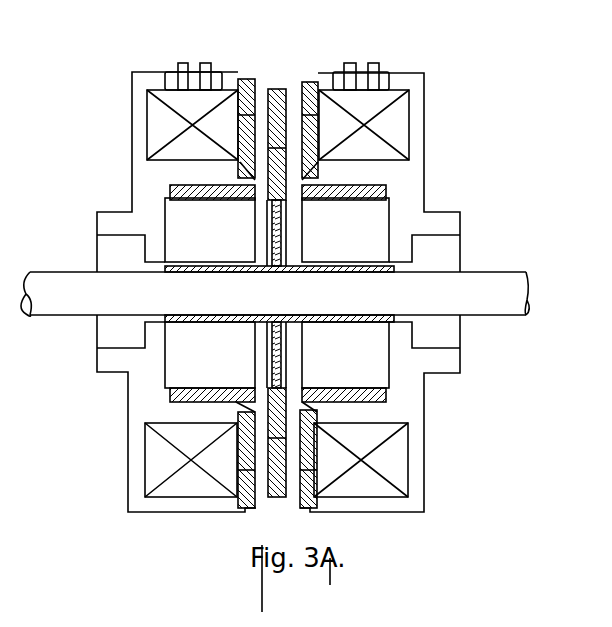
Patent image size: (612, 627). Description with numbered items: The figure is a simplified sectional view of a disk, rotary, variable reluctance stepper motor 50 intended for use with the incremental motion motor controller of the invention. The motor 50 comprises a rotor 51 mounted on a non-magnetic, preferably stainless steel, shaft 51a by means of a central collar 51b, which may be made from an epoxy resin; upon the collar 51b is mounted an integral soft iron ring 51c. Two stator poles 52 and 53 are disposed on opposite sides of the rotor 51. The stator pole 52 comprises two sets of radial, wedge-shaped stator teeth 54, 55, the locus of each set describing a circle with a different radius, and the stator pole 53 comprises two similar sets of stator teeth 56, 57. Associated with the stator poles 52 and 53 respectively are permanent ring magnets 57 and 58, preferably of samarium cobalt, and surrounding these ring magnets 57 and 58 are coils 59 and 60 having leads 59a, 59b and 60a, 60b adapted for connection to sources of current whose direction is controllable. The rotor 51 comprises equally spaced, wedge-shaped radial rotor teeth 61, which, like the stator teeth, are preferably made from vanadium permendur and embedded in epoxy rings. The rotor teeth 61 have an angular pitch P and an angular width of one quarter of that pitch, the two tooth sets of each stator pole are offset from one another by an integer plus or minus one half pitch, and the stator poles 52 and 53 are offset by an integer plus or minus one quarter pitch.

The motor 50 is at (308, 50).
The rotor 51 is at (270, 498).
The shaft 51a is at (514, 277).
The central collar 51b is at (165, 268).
The soft iron ring 51c is at (278, 382).
The stator pole 52 is at (132, 72).
The stator pole 53 is at (424, 72).
The stator teeth 54 is at (256, 79).
The stator teeth 55 is at (250, 163).
The stator teeth 56 is at (302, 86).
The permanent ring magnet 57 is at (220, 239).
The permanent ring magnet 58 is at (356, 235).
The coil 59 is at (162, 131).
The lead 59a is at (181, 63).
The lead 59b is at (208, 63).
The coil 60 is at (395, 124).
The lead 60a is at (350, 63).
The lead 60b is at (378, 63).
The rotor teeth 61 is at (282, 497).